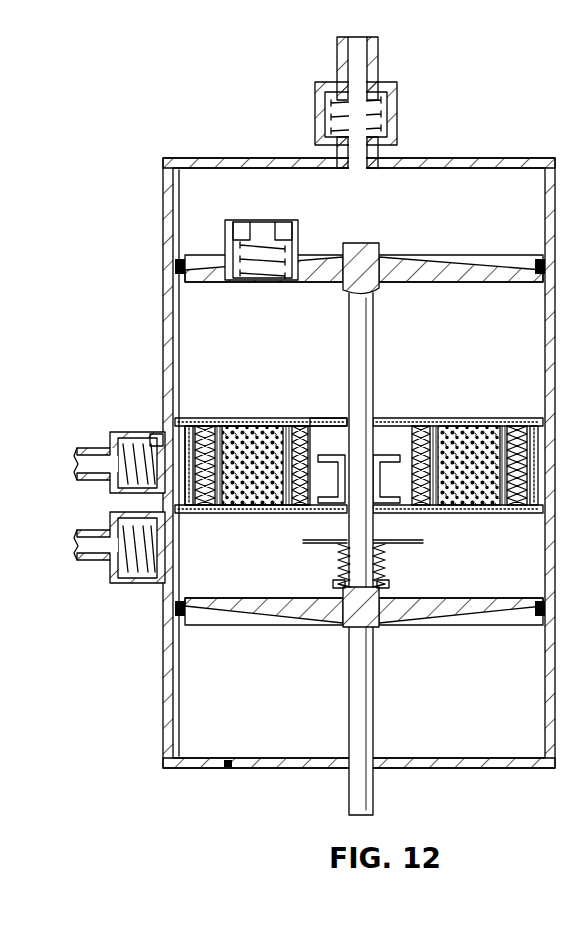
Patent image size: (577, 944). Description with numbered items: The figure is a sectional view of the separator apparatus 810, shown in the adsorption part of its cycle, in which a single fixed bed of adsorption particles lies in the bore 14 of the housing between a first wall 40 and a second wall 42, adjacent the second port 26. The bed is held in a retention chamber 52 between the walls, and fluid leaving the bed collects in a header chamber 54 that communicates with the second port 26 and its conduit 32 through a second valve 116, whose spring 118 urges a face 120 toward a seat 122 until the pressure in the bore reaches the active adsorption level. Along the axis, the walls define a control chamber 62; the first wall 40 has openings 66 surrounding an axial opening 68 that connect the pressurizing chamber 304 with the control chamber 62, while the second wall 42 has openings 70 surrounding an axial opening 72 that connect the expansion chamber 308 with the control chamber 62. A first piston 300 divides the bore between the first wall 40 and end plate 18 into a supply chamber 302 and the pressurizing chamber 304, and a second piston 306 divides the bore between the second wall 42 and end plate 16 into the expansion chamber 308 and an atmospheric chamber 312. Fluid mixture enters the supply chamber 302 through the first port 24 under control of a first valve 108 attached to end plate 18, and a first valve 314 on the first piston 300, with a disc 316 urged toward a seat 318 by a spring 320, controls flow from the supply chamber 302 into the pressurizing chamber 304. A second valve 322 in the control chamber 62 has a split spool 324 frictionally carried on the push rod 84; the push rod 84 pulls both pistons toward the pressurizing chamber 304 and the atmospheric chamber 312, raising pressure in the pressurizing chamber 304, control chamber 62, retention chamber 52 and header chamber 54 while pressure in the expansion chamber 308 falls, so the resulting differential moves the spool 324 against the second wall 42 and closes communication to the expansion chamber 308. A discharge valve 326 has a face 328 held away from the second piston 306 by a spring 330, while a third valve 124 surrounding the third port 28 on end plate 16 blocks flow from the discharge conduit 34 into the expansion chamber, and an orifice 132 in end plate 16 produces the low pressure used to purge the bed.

The bore 14 is at (182, 192).
The end plate 16 is at (278, 762).
The end plate 18 is at (497, 158).
The first port 24 is at (350, 167).
The second port 26 is at (186, 432).
The third port 28 is at (181, 553).
The conduit 32 is at (90, 480).
The discharge conduit 34 is at (90, 566).
The first wall 40 is at (212, 432).
The second wall 42 is at (240, 514).
The retention chamber 52 is at (266, 440).
The header chamber 54 is at (540, 441).
The control chamber 62 is at (311, 454).
The openings 66 is at (318, 424).
The axial opening 68 is at (334, 420).
The openings 70 is at (335, 512).
The axial opening 72 is at (380, 512).
The push rod 84 is at (366, 798).
The first valve 108 is at (402, 96).
The second valve 116 is at (110, 432).
The spring 118 is at (122, 494).
The face 120 is at (127, 432).
The seat 122 is at (158, 433).
The third valve 124 is at (125, 576).
The orifice 132 is at (228, 767).
The first piston 300 is at (501, 263).
The supply chamber 302 is at (408, 224).
The pressurizing chamber 304 is at (280, 334).
The second piston 306 is at (502, 612).
The expansion chamber 308 is at (490, 566).
The atmospheric chamber 312 is at (251, 679).
The first valve 314 is at (228, 292).
The disc 316 is at (288, 242).
The seat 318 is at (272, 246).
The spring 320 is at (232, 258).
The second valve 322 is at (395, 442).
The split spool 324 is at (388, 508).
The discharge valve 326 is at (303, 576).
The face 328 is at (336, 568).
The spring 330 is at (386, 566).
The separator apparatus 810 is at (120, 744).